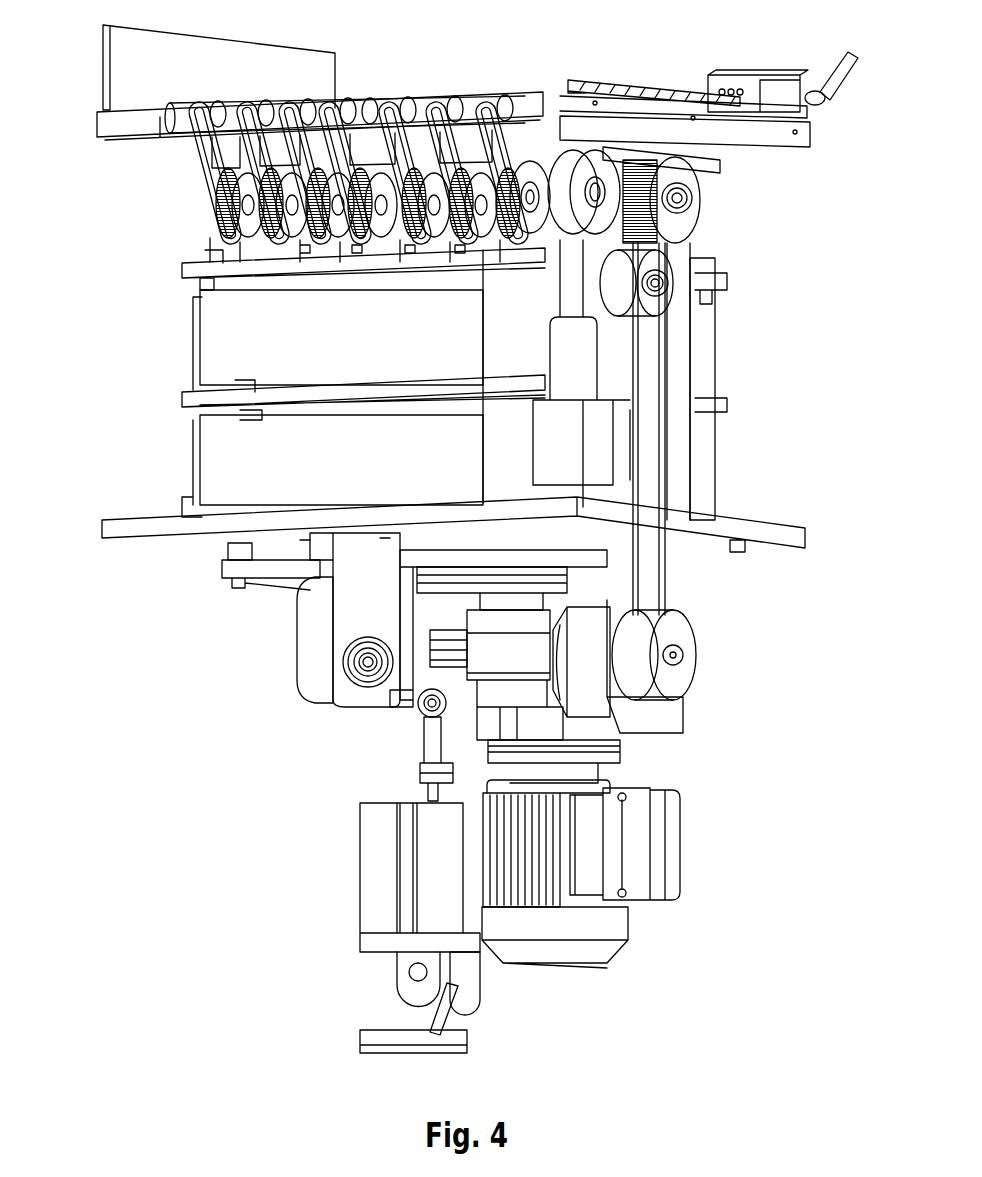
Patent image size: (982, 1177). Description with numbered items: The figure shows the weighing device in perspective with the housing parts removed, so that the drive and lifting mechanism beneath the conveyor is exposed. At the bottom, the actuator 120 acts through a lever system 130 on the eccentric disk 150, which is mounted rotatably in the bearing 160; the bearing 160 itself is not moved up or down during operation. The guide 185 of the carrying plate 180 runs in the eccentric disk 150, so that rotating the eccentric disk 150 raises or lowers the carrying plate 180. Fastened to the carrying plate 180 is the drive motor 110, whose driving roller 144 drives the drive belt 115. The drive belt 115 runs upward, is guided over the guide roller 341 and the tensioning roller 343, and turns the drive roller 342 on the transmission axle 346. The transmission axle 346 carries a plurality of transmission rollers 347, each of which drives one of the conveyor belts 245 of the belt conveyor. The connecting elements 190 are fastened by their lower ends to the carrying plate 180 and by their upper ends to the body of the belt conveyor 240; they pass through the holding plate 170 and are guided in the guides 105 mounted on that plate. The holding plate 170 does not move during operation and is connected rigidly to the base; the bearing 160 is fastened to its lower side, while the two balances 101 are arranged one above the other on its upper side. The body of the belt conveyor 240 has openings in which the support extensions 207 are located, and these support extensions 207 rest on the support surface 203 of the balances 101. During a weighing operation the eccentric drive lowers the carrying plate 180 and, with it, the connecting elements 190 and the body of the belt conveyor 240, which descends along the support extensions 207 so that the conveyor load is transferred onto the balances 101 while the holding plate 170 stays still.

The balances 101 is at (230, 372).
The guides 105 is at (710, 366).
The drive motor 110 is at (615, 922).
The drive belt 115 is at (677, 585).
The actuator 120 is at (380, 905).
The lever system 130 is at (424, 745).
The driving roller 144 is at (675, 625).
The eccentric disk 150 is at (312, 686).
The bearing 160 is at (352, 615).
The holding plate 170 is at (152, 530).
The carrying plate 180 is at (275, 563).
The guide 185 is at (440, 598).
The connecting elements 190 is at (572, 300).
The support surface 203 is at (195, 268).
The support extensions 207 is at (283, 255).
The body of the belt conveyor 240 is at (770, 130).
The conveyor belts 245 is at (300, 173).
The guide roller 341 is at (675, 232).
The drive roller 342 is at (590, 160).
The tensioning roller 343 is at (627, 312).
The transmission axle 346 is at (527, 185).
The transmission rollers 347 is at (428, 262).